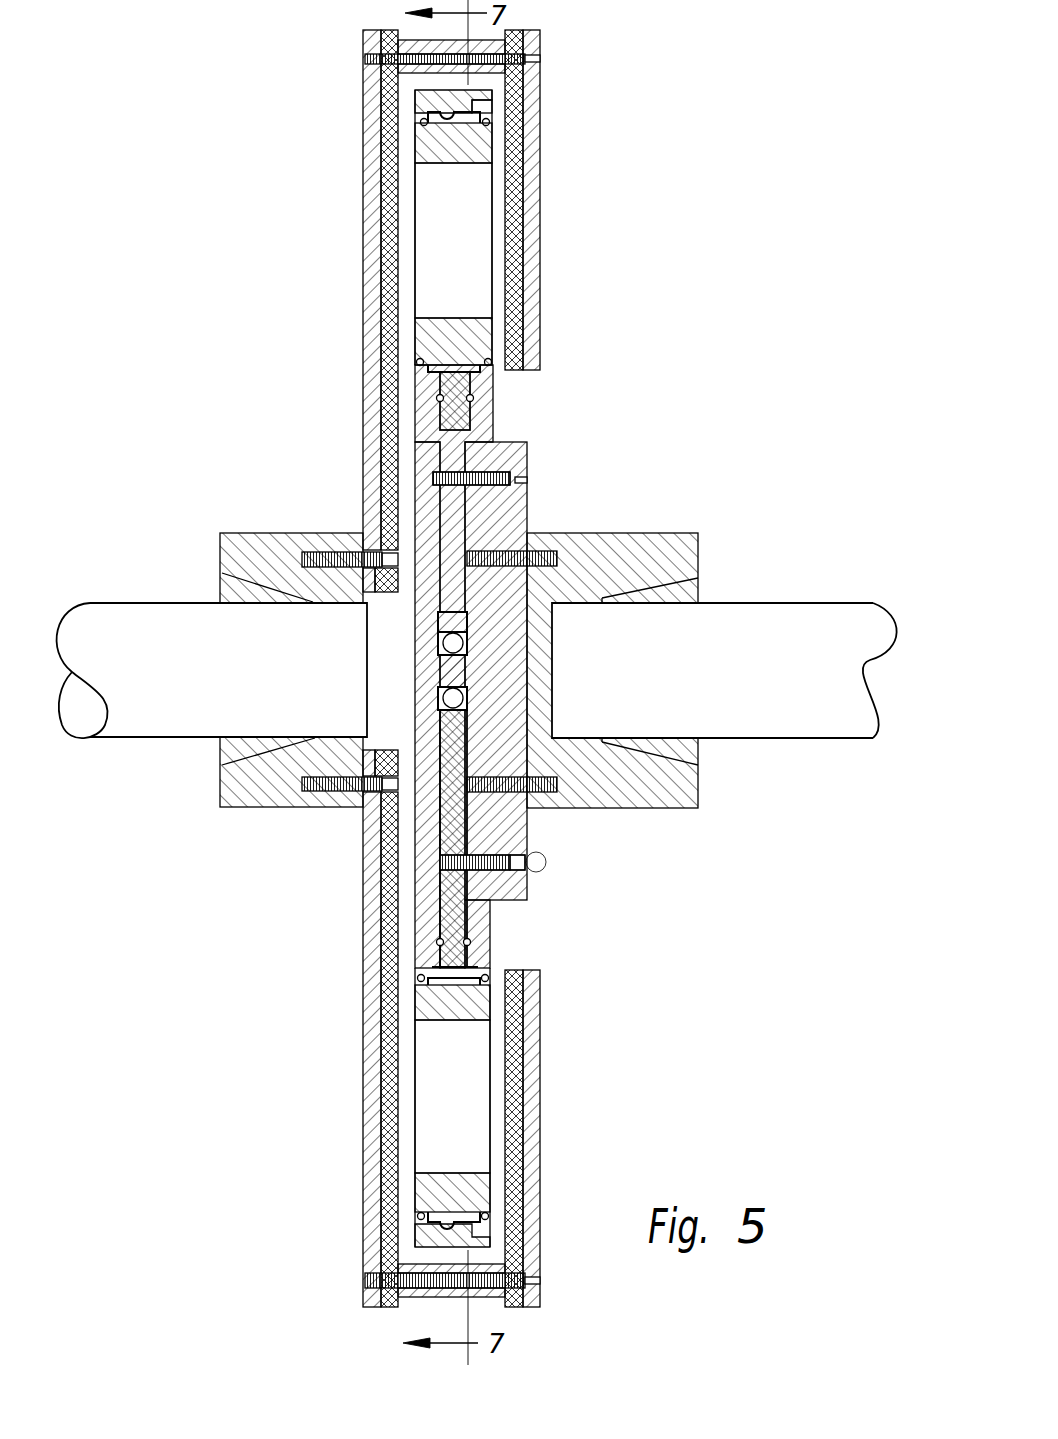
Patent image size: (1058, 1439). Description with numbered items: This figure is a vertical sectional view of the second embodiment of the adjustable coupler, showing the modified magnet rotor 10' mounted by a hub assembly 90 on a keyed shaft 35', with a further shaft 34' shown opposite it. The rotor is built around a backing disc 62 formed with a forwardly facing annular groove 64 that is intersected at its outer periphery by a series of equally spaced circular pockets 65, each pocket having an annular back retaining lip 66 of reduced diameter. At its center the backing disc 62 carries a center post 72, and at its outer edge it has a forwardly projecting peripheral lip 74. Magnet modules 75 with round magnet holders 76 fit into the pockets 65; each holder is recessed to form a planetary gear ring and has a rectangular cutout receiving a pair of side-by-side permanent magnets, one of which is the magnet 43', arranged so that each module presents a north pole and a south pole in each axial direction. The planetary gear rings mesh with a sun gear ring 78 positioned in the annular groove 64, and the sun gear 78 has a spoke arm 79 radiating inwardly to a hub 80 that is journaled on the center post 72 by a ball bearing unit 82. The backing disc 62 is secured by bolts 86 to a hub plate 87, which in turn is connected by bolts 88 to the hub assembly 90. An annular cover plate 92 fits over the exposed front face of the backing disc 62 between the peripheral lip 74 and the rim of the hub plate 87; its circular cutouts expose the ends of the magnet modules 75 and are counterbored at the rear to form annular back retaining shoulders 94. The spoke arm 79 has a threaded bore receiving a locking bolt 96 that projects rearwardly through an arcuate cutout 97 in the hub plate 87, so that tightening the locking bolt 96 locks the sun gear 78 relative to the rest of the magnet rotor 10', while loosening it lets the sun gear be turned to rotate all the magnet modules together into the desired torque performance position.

The magnet rotor 10' is at (368, 668).
The input shaft 34' is at (212, 691).
The keyed shaft 35' is at (724, 698).
The permanent magnet 43' is at (397, 668).
The backing disc 62 is at (433, 535).
The annular groove 64 is at (445, 443).
The circular pocket 65 is at (363, 57).
The back retaining lip 66 is at (425, 118).
The center post 72 is at (452, 672).
The peripheral lip 74 is at (488, 92).
The magnet module 75 is at (398, 165).
The magnet holder 76 is at (437, 337).
The sun gear ring 78 is at (470, 412).
The spoke arm 79 is at (450, 825).
The hub 80 is at (448, 640).
The ball bearing unit 82 is at (440, 693).
The bolt 86 is at (527, 480).
The hub plate 87 is at (512, 527).
The bolt 88 is at (447, 619).
The hub assembly 90 is at (680, 540).
The cover plate 92 is at (472, 105).
The back retaining shoulder 94 is at (488, 120).
The locking bolt 96 is at (548, 855).
The arcuate cutout 97 is at (487, 867).